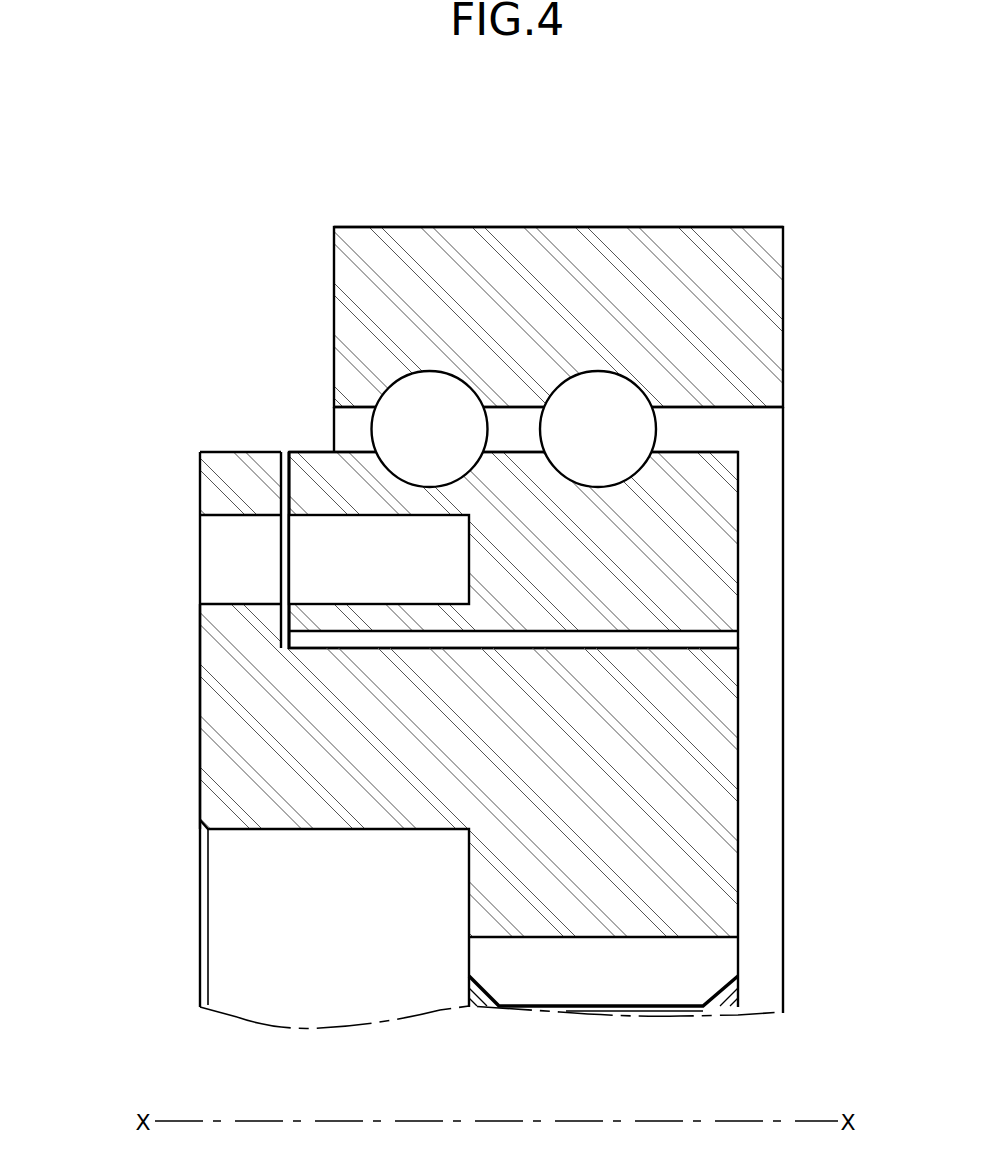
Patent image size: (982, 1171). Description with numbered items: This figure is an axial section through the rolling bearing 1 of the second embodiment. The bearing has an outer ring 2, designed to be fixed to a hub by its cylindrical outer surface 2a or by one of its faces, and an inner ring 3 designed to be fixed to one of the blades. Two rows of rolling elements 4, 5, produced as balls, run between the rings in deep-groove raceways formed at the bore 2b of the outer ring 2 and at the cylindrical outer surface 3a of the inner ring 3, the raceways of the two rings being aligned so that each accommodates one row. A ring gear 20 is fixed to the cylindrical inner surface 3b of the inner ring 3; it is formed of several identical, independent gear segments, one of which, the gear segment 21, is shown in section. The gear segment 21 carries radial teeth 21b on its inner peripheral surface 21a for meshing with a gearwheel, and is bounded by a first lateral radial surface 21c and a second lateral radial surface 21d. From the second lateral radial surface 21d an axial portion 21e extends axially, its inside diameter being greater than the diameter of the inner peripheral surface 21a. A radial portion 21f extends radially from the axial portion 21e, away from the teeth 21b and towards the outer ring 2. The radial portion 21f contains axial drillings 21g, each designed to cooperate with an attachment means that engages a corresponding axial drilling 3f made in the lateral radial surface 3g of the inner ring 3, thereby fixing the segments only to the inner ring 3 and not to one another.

The rolling bearing 1 is at (769, 194).
The outer ring 2 is at (665, 240).
The cylindrical outer surface 2a is at (563, 227).
The bore 2b is at (728, 408).
The inner ring 3 is at (680, 549).
The cylindrical outer surface 3a is at (696, 452).
The cylindrical inner surface 3b is at (707, 632).
The axial drilling 3f is at (325, 517).
The lateral radial surface 3g is at (287, 482).
The first row of rolling elements 4 is at (421, 444).
The second row of rolling elements 5 is at (607, 444).
The ring gear 20 is at (747, 805).
The gear segment 21 is at (710, 850).
The inner peripheral surface 21a is at (700, 938).
The radial teeth 21b is at (673, 1007).
The first lateral radial surface 21c is at (738, 887).
The second lateral radial surface 21d is at (469, 883).
The axial portion 21e is at (225, 772).
The radial portion 21f is at (225, 622).
The axial drillings 21g is at (223, 516).